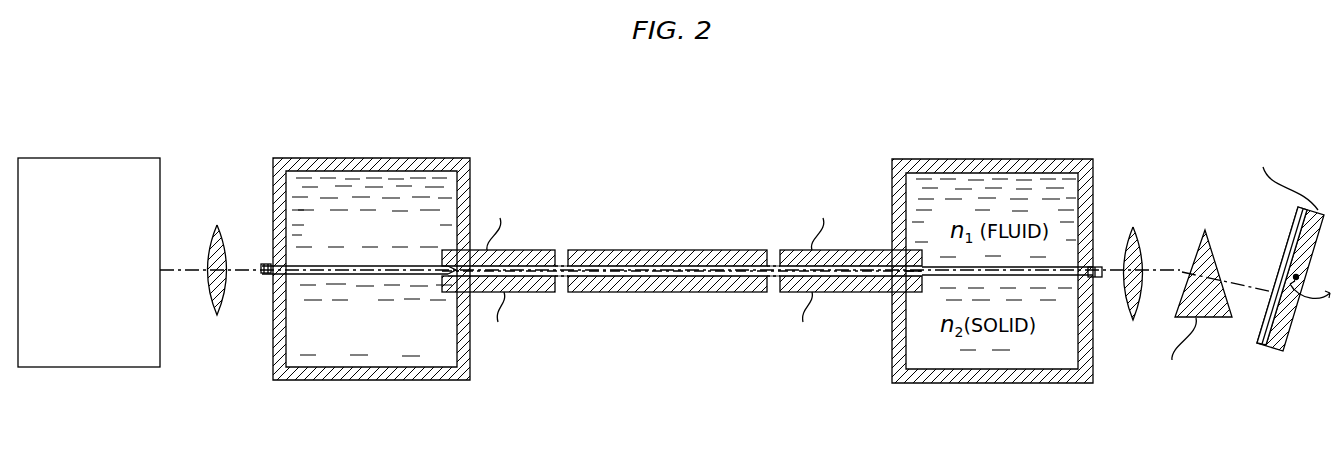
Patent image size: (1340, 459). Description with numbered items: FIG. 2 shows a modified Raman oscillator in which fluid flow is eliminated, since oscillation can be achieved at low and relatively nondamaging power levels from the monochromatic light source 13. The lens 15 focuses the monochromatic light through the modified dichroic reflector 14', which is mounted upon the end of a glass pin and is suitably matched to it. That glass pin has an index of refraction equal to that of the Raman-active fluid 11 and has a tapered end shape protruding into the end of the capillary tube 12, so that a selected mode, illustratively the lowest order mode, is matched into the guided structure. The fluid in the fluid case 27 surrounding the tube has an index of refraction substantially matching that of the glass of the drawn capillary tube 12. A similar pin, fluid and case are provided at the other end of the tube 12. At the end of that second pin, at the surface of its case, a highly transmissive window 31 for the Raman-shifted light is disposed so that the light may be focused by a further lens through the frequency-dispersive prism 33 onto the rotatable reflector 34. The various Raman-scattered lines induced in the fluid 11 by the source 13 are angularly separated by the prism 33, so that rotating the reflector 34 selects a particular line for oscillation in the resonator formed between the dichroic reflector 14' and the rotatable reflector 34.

The monochromatic light source 13 is at (93, 367).
The lens 15 is at (221, 302).
The modified dichroic reflector 14' is at (253, 236).
The fluid case 27 is at (373, 380).
The capillary tube 12 is at (660, 250).
The Raman-active fluid 11 is at (660, 292).
The highly transmissive window 31 is at (1095, 266).
The frequency-dispersive prism 33 is at (1210, 236).
The rotatable reflector 34 is at (1279, 352).